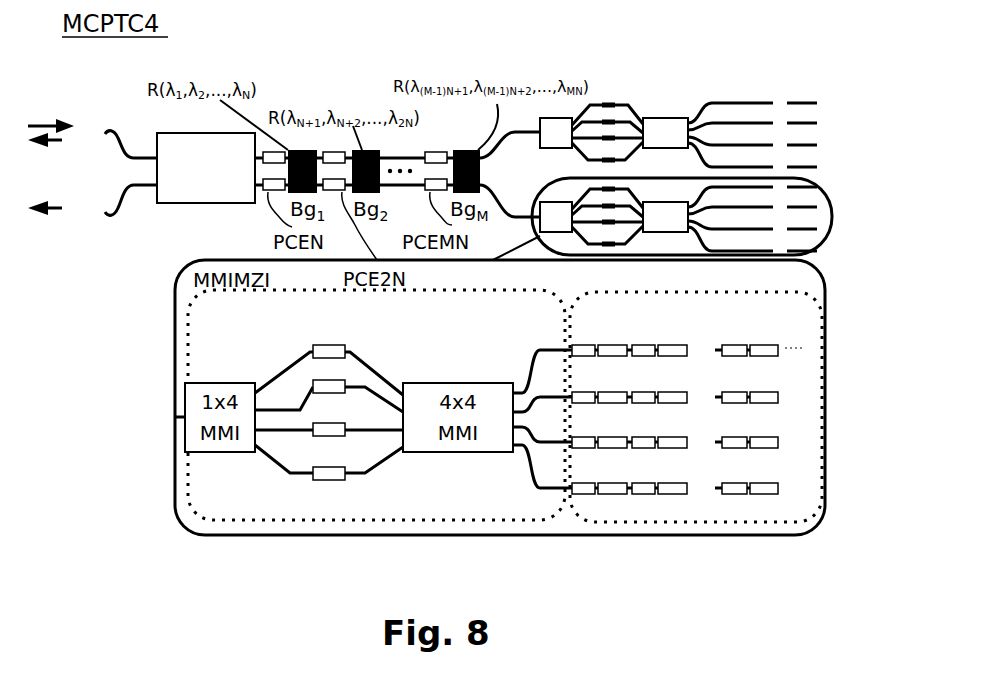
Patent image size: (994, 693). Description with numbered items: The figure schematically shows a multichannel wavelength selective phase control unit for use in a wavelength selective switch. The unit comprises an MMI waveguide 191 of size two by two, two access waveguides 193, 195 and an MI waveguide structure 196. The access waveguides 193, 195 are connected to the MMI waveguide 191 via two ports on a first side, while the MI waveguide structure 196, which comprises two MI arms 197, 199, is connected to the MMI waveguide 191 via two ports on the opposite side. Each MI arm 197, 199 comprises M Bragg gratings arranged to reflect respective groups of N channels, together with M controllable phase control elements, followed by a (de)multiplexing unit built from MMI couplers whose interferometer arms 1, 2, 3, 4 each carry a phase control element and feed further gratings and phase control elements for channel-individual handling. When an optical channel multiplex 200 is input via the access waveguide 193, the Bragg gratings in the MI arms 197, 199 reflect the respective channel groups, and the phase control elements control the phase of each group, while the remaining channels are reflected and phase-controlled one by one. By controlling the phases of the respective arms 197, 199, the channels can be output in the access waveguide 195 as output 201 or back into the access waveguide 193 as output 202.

The MMI waveguide 191 is at (187, 205).
The access waveguide 193 is at (130, 140).
The access waveguide 195 is at (122, 188).
The MI waveguide structure 196 is at (714, 132).
The MI arm 197 is at (830, 93).
The MI arm 199 is at (830, 180).
The optical channel multiplex 200 is at (72, 118).
The output 201 is at (50, 215).
The output 202 is at (48, 150).
The first MZI arm with phase control element 1 is at (329, 364).
The second MZI arm with phase control element 2 is at (329, 389).
The third MZI arm with phase control element 3 is at (329, 420).
The fourth MZI arm with phase control element 4 is at (329, 462).